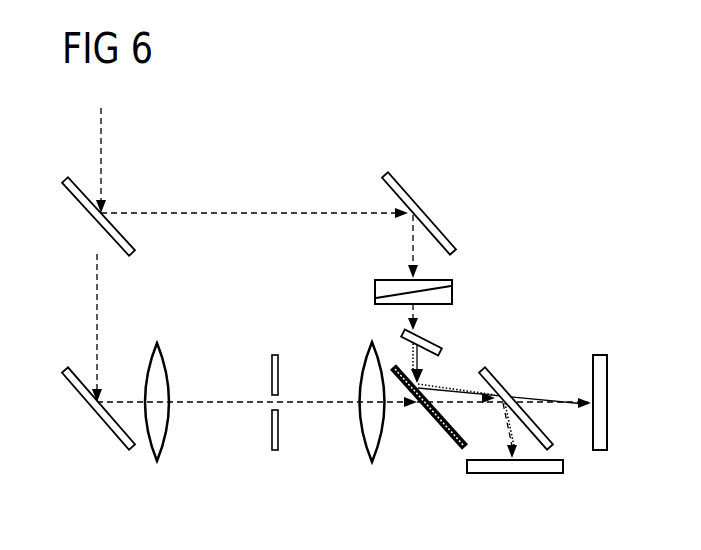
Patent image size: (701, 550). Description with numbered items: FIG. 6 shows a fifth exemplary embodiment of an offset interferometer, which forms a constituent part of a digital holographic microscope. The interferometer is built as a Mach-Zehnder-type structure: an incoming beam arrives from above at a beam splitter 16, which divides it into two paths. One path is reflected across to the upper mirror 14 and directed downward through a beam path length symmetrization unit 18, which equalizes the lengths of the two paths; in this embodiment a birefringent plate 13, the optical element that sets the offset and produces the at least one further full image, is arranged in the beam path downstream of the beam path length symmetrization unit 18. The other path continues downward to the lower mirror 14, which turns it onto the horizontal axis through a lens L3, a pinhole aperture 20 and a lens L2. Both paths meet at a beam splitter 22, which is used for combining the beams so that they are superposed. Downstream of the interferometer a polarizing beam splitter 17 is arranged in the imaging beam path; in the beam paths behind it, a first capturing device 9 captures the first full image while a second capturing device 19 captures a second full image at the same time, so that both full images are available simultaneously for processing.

The capturing device 9 is at (601, 353).
The birefringent plate 13 is at (440, 345).
The mirrors 14 is at (383, 178).
The beam splitter 16 is at (134, 251).
The polarizing beam splitter 17 is at (497, 380).
The beam path length symmetrization unit 18 is at (375, 283).
The second capturing device 19 is at (515, 473).
The pinhole aperture 20 is at (277, 452).
The beam splitter 22 is at (457, 443).
The lens L2 is at (372, 462).
The lens L3 is at (162, 460).